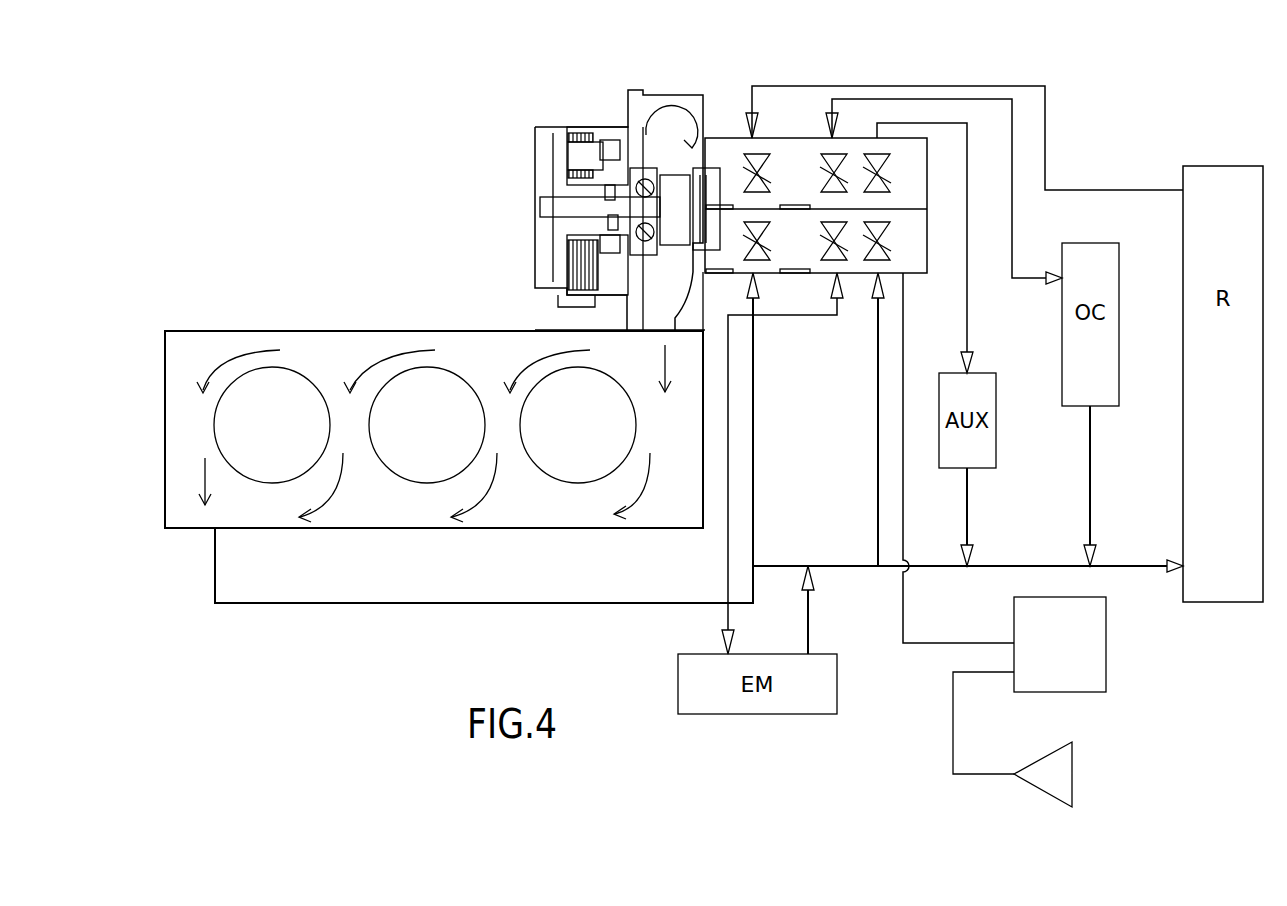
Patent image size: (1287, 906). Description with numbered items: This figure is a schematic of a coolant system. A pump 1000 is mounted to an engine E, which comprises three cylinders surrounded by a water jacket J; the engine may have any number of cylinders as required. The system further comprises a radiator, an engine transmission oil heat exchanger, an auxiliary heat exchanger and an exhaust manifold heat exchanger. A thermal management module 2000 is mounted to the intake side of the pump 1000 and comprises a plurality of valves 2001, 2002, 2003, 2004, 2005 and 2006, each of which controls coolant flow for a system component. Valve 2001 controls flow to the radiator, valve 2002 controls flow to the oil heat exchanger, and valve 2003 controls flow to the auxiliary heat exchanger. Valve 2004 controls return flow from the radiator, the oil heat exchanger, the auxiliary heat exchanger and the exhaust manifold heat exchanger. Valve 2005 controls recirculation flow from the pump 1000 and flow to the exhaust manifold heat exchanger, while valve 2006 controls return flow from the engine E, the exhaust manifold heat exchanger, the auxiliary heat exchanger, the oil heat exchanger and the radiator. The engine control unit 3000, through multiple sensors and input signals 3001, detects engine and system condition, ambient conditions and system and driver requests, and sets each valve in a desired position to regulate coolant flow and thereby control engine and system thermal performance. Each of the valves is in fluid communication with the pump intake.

The pump 1000 is at (600, 110).
The thermal management module 2000 is at (803, 138).
The valve 2001 is at (748, 160).
The valve 2002 is at (838, 160).
The valve 2003 is at (880, 168).
The valve 2004 is at (885, 237).
The valve 2005 is at (838, 257).
The valve 2006 is at (760, 258).
The electronic control unit 3000 is at (1106, 672).
The sensors and input signals 3001 is at (1072, 755).
The water jacket J is at (197, 418).
The engine E is at (165, 478).